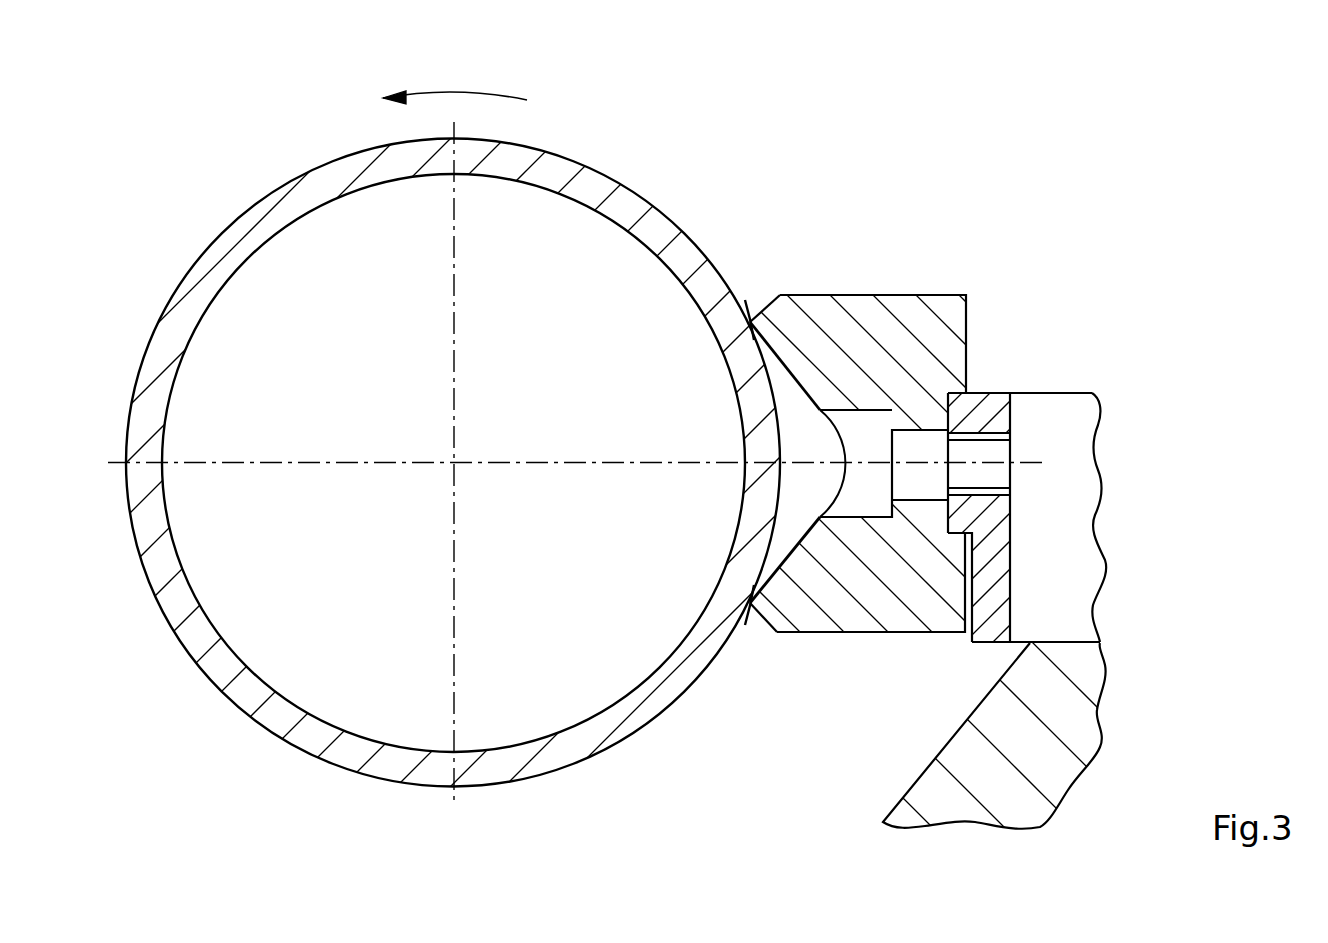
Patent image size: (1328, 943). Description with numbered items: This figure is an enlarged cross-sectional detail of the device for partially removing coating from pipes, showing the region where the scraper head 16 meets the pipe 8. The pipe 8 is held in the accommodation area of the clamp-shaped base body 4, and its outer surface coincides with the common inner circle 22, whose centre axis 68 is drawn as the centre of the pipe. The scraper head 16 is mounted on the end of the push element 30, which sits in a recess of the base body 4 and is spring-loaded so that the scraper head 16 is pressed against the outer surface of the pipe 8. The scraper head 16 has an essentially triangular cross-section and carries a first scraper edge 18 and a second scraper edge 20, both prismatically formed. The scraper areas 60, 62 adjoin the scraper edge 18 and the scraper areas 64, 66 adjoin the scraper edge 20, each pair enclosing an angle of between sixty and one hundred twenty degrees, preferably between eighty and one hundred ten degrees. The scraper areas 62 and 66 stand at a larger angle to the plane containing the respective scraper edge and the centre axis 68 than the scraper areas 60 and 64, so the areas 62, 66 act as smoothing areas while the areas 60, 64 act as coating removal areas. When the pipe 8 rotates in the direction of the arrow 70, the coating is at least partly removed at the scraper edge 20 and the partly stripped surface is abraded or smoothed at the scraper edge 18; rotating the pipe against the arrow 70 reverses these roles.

The base body 4 is at (1082, 735).
The pipe 8 is at (622, 471).
The scraper head 16 is at (881, 466).
The first scraper edge 18 is at (748, 320).
The second scraper edge 20 is at (746, 607).
The common inner circle 22 is at (658, 190).
The push element 30 is at (1062, 417).
The scraper area 60 is at (763, 300).
The scraper area 62 is at (773, 363).
The scraper area 64 is at (784, 658).
The scraper area 66 is at (782, 565).
The centre axis 68 is at (448, 453).
The arrow 70 is at (497, 92).